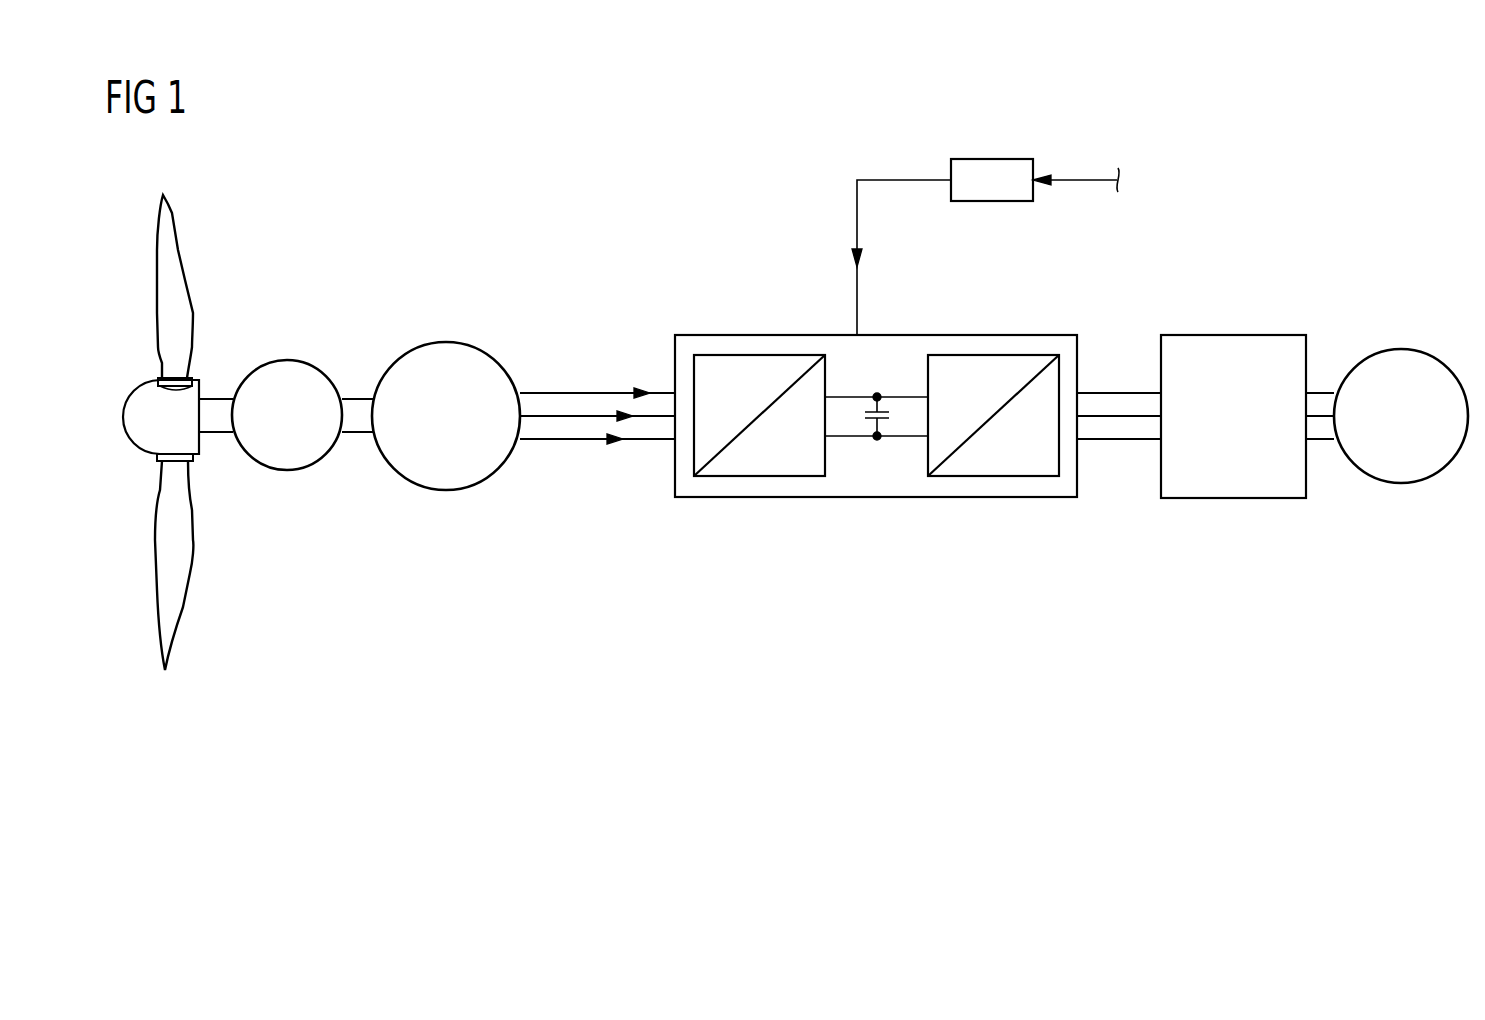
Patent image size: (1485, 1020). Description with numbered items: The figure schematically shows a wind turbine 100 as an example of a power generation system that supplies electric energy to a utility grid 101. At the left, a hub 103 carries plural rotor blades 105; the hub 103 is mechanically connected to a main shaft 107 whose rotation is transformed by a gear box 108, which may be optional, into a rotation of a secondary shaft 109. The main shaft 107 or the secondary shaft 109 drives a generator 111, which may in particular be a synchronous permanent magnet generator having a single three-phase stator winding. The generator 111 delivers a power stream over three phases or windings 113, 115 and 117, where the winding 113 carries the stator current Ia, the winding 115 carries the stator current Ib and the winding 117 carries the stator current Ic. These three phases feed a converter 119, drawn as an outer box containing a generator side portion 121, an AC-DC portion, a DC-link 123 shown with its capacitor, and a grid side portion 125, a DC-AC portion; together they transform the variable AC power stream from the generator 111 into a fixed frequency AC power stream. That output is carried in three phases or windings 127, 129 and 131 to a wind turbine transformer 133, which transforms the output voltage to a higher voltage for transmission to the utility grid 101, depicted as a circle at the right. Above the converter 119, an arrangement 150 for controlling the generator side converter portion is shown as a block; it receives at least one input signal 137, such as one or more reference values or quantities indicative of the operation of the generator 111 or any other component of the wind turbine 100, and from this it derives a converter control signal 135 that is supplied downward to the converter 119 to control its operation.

The wind turbine 100 is at (1348, 145).
The utility grid 101 is at (1401, 348).
The hub 103 is at (140, 387).
The rotor blades 105 is at (186, 268).
The main shaft 107 is at (218, 399).
The gear box 108 is at (291, 360).
The secondary shaft 109 is at (352, 399).
The generator 111 is at (446, 342).
The winding 113 is at (552, 443).
The winding 115 is at (553, 412).
The winding 117 is at (600, 390).
The stator current Ia is at (625, 442).
The stator current Ib is at (640, 418).
The stator current Ic is at (636, 390).
The converter 119 is at (877, 498).
The generator side portion 121 is at (757, 353).
The DC-link 123 is at (890, 360).
The grid side portion 125 is at (1003, 352).
The winding 127 is at (1118, 441).
The winding 129 is at (1116, 415).
The winding 131 is at (1146, 392).
The wind turbine transformer 133 is at (1233, 334).
The converter control signal 135 is at (853, 258).
The input signal 137 is at (1037, 174).
The arrangement for controlling a generator side converter portion 150 is at (993, 158).